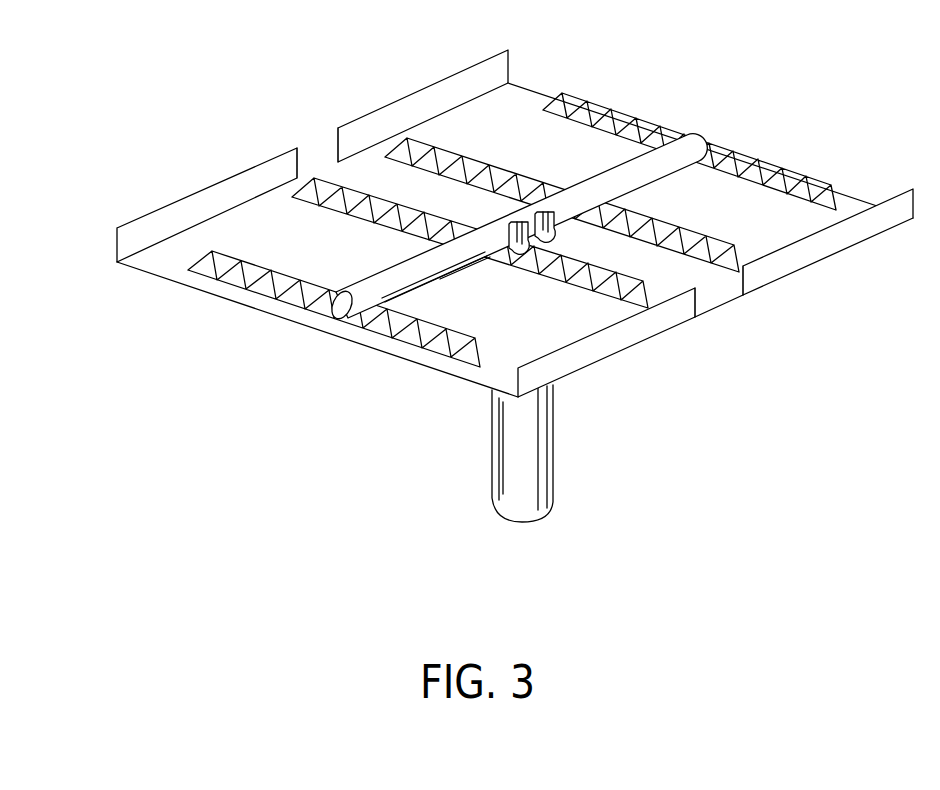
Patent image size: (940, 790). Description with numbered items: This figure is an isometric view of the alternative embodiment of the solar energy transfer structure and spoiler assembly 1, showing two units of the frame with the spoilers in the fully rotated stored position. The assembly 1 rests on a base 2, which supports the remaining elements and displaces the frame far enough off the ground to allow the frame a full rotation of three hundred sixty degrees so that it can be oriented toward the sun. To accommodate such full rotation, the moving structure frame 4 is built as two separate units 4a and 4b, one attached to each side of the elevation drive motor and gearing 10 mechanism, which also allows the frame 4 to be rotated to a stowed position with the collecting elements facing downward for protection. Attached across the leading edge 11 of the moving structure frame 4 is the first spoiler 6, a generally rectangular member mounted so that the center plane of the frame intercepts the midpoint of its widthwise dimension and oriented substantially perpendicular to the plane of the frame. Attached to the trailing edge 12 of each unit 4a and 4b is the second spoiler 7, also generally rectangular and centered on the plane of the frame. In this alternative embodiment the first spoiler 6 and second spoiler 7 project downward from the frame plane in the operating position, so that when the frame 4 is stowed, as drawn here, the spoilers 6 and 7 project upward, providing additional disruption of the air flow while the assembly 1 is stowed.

The solar energy transfer structure and spoiler assembly 1 is at (541, 612).
The base 2 is at (540, 444).
The moving structure frame 4 is at (300, 248).
The unit of the moving structure frame 4a is at (733, 141).
The unit of the moving structure frame 4b is at (303, 328).
The first spoiler 6 is at (352, 108).
The second spoiler 7 is at (747, 298).
The elevation drive motor and gearing 10 is at (553, 210).
The leading edge 11 is at (117, 262).
The trailing edge 12 is at (517, 389).